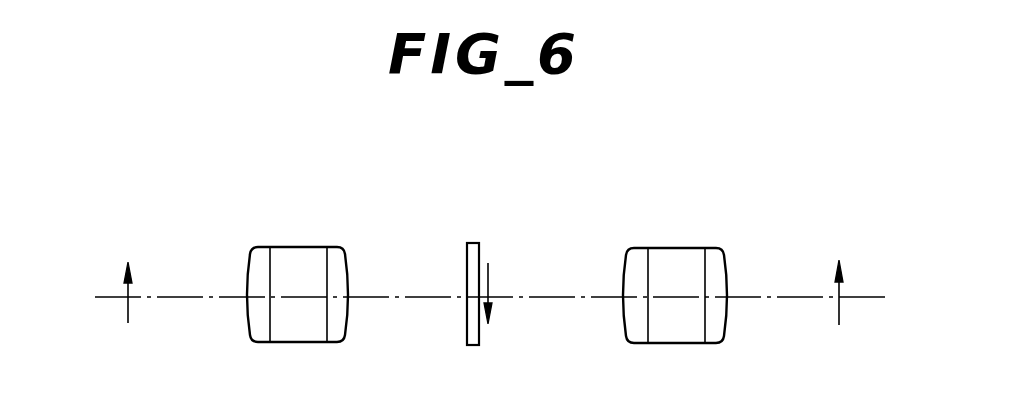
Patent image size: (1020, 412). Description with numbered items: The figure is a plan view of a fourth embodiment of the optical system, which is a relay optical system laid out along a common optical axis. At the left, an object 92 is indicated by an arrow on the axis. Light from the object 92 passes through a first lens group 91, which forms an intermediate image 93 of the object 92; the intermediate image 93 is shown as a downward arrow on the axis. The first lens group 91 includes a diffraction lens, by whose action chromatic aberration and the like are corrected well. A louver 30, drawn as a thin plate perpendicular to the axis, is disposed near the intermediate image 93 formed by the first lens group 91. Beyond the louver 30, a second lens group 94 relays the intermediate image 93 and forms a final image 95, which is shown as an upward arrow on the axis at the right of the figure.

The first lens group 91 is at (298, 247).
The object 92 is at (128, 310).
The intermediate image 93 is at (488, 277).
The second lens group 94 is at (678, 248).
The final image 95 is at (839, 307).
The louver 30 is at (467, 323).